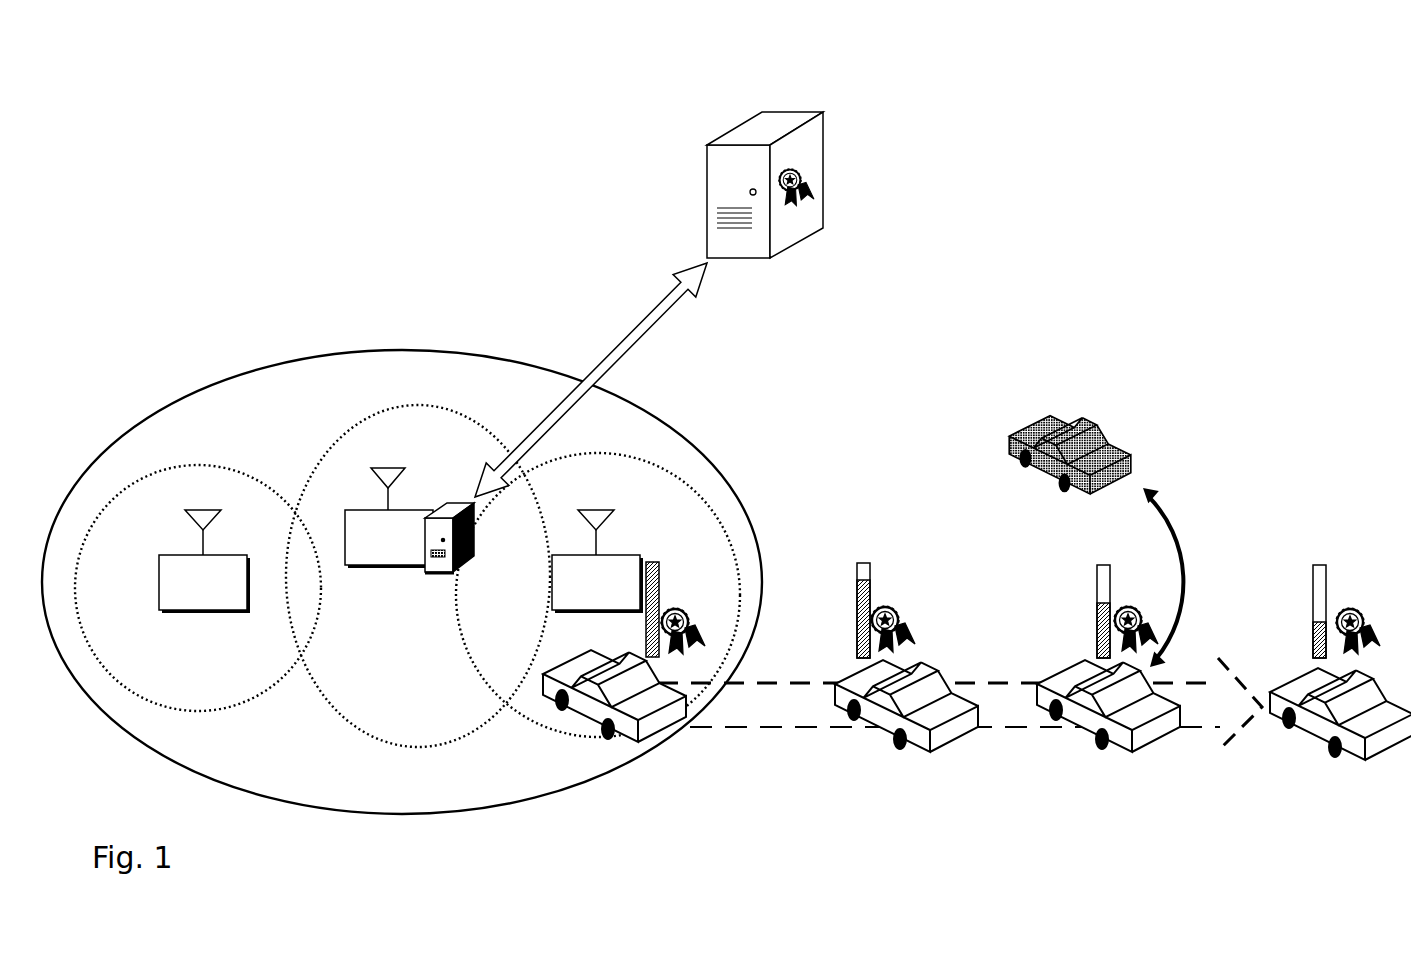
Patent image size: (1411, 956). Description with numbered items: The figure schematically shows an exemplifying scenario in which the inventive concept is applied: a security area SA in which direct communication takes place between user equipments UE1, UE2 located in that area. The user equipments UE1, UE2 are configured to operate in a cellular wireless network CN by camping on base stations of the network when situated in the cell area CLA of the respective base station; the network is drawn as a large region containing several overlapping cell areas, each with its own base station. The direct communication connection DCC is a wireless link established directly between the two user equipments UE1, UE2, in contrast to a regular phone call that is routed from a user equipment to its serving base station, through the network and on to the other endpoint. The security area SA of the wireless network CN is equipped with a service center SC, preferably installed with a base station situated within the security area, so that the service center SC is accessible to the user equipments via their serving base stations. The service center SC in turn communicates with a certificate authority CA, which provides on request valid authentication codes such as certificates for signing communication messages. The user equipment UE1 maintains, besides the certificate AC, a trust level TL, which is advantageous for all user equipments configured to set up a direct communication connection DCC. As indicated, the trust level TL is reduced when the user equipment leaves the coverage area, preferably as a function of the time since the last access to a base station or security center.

The cellular wireless network CN is at (166, 154).
The security area SA is at (335, 387).
The cell area CLA is at (360, 448).
The service center SC is at (463, 507).
The certificate authority CA is at (808, 145).
The user equipment UE1 is at (637, 740).
The user equipment UE2 is at (1040, 433).
The trust level TL is at (1302, 643).
The certificate AC is at (690, 617).
The direct communication connection DCC is at (1199, 577).